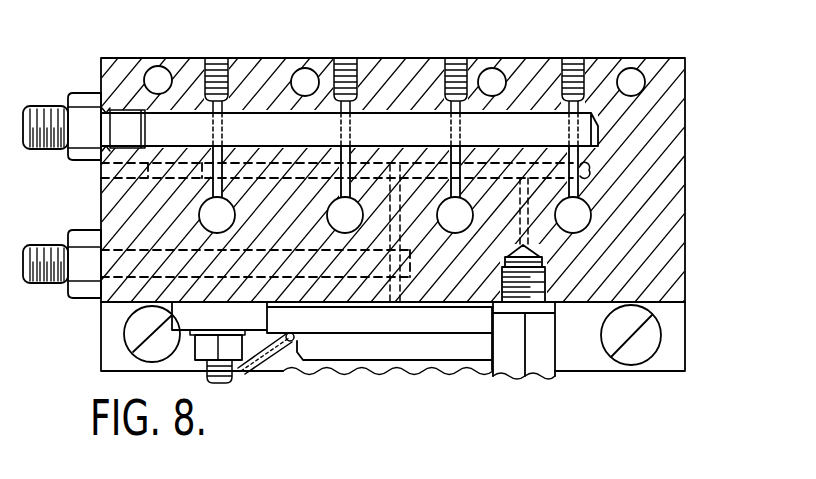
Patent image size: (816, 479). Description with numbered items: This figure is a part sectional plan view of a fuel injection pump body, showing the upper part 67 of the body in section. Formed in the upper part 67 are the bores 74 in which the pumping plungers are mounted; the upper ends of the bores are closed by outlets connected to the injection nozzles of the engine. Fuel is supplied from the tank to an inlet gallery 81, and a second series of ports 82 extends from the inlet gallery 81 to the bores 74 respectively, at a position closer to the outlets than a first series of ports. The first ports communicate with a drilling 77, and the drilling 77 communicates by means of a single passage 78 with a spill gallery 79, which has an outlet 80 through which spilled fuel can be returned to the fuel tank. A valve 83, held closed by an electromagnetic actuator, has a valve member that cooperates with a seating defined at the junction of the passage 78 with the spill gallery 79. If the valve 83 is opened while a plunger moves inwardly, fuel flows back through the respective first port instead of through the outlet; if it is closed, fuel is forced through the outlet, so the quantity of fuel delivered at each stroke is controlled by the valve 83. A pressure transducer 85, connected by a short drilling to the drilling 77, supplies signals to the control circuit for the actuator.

The upper part 67 is at (657, 142).
The bores 74 is at (580, 218).
The drilling 77 is at (506, 190).
The single passage 78 is at (399, 220).
The spill gallery 79 is at (80, 302).
The outlet 80 is at (45, 243).
The inlet gallery 81 is at (170, 118).
The second series of ports 82 is at (455, 190).
The valve 83 is at (392, 300).
The pressure transducer 85 is at (538, 348).